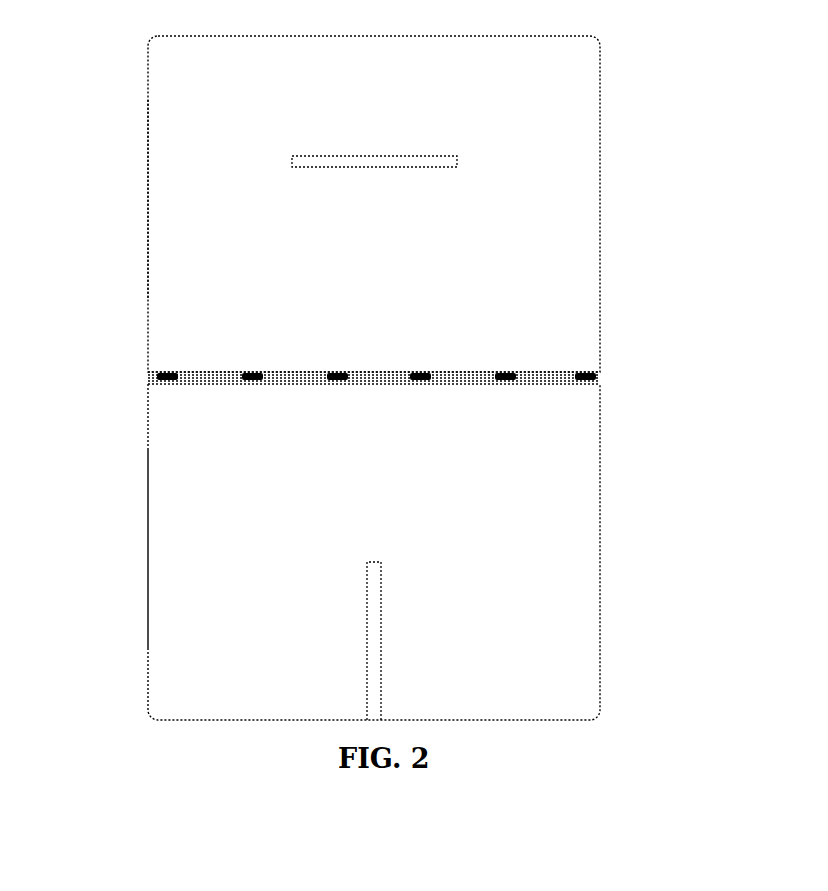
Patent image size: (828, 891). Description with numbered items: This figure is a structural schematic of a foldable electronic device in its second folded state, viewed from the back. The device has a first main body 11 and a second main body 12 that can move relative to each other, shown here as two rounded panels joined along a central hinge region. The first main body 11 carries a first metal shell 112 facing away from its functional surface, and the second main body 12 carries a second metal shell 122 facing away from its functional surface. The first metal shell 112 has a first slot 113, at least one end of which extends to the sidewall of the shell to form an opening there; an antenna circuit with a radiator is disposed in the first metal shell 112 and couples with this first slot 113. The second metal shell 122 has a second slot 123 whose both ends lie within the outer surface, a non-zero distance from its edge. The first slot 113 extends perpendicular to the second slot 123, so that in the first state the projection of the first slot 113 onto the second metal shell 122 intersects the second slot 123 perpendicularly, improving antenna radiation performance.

The first main body 11 is at (612, 540).
The second main body 12 is at (612, 257).
The first metal shell 112 is at (165, 539).
The first slot 113 is at (382, 656).
The second metal shell 122 is at (178, 208).
The second slot 123 is at (404, 144).